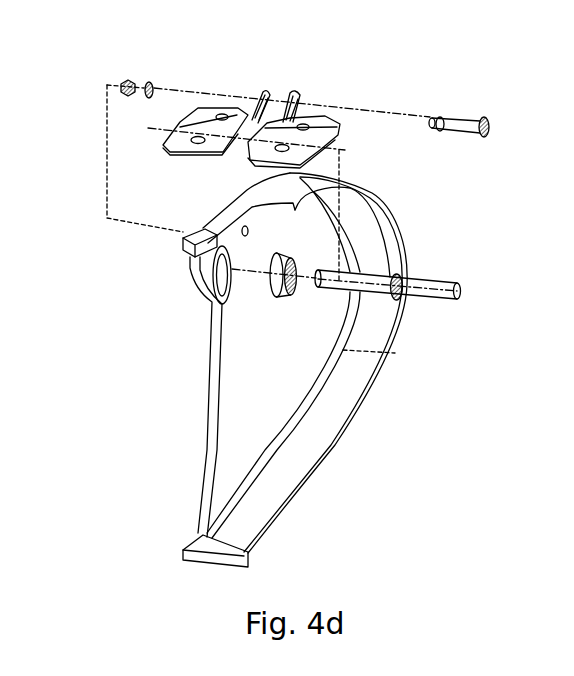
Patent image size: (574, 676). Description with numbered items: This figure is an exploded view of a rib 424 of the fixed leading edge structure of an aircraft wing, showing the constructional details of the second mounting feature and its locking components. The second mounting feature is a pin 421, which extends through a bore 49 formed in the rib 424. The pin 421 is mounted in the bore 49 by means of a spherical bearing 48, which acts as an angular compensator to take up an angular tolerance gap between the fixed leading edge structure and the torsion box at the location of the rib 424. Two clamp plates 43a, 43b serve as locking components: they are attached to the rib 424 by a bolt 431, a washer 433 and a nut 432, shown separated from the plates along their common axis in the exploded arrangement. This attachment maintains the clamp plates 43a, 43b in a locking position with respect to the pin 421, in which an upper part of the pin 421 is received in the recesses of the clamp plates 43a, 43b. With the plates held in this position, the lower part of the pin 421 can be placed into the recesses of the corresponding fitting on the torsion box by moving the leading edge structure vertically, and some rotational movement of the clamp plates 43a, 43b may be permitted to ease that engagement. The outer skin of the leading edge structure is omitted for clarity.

The rib 424 is at (291, 366).
The bore 49 is at (215, 273).
The spherical bearing 48 is at (281, 297).
The pin 421 is at (437, 278).
The clamp plate 43a is at (227, 110).
The clamp plate 43b is at (317, 118).
The nut 432 is at (127, 81).
The washer 433 is at (145, 93).
The bolt 431 is at (458, 115).